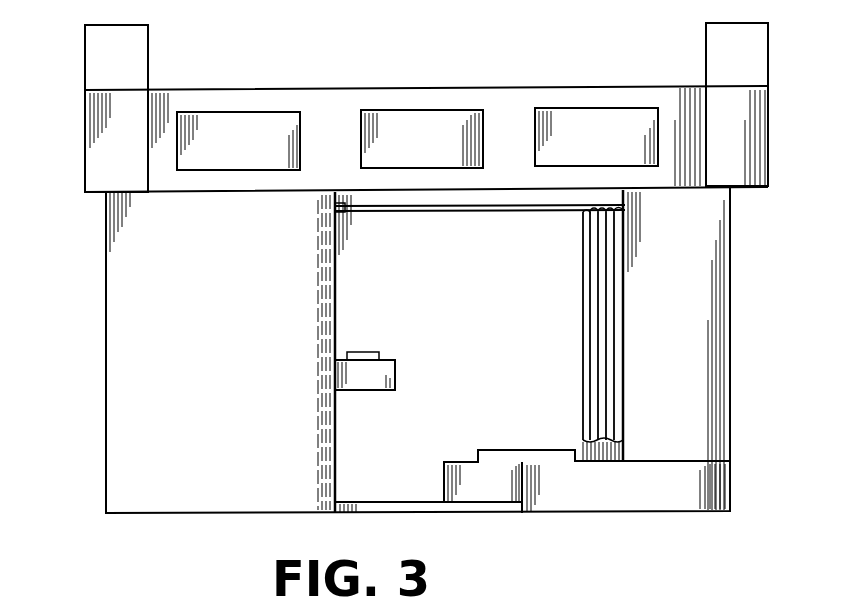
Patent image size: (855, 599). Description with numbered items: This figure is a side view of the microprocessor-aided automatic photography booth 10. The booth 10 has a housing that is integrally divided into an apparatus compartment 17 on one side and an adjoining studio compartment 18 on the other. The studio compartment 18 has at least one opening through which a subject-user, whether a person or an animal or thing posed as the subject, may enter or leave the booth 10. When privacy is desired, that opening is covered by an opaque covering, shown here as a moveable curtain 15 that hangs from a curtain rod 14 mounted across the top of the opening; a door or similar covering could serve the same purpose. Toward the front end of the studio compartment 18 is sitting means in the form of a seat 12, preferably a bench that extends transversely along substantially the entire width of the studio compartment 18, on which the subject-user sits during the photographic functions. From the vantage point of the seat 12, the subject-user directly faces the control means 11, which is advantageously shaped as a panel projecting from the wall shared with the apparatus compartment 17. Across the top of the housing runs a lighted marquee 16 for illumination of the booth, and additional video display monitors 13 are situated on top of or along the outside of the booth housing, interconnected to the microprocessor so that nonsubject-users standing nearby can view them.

The automatic photography booth 10 is at (418, 68).
The control means 11 is at (352, 382).
The seat 12 is at (483, 478).
The video display monitors 13 is at (92, 55).
The curtain rod 14 is at (403, 210).
The curtain 15 is at (586, 305).
The lighted marquee 16 is at (255, 120).
The apparatus compartment 17 is at (137, 276).
The studio compartment 18 is at (478, 407).